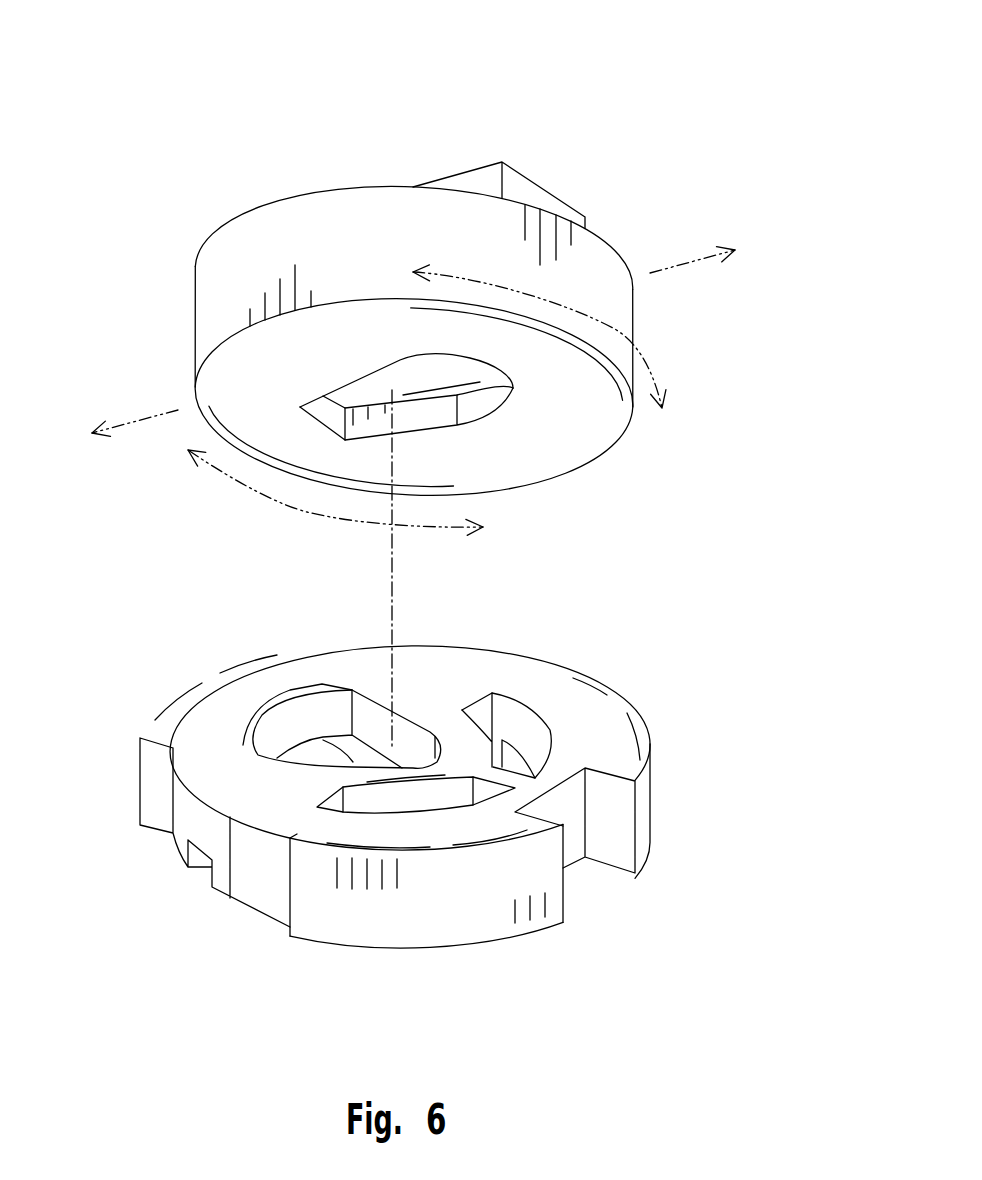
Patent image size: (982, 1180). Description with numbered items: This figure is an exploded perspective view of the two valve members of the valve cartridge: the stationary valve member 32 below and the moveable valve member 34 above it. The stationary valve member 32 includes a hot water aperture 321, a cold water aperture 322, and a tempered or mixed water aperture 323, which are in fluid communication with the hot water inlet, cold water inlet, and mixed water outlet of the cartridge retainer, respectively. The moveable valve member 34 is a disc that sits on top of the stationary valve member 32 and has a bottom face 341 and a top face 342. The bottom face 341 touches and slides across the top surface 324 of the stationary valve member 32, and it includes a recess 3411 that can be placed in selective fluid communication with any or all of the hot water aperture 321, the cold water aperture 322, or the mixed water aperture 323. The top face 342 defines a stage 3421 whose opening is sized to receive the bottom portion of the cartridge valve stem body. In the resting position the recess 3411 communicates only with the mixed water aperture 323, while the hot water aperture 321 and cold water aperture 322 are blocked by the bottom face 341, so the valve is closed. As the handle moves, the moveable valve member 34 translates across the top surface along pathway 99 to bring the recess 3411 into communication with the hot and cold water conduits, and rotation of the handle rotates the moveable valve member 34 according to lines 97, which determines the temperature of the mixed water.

The moveable valve member 34 is at (322, 137).
The top face 342 is at (247, 212).
The stage 3421 is at (548, 203).
The bottom face 341 is at (582, 435).
The recess 3411 is at (472, 433).
The pathway 99 is at (688, 260).
The lines 97 is at (643, 358).
The stationary valve member 32 is at (680, 885).
The top surface 324 is at (435, 692).
The mixed water aperture 323 is at (267, 710).
The hot water aperture 321 is at (560, 725).
The cold water aperture 322 is at (432, 822).